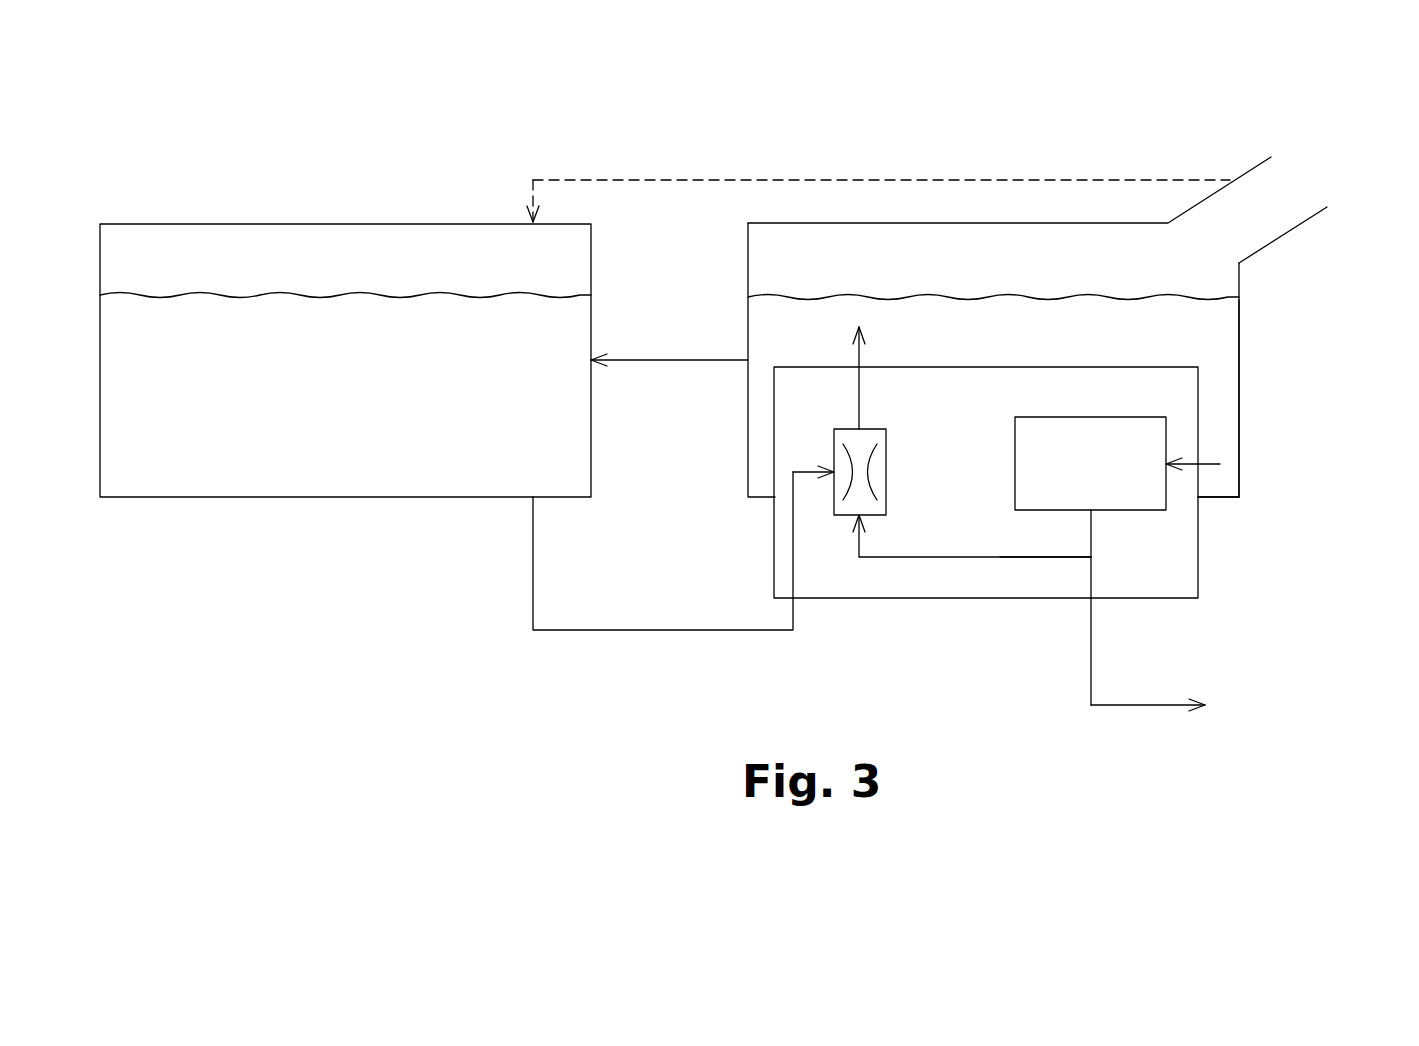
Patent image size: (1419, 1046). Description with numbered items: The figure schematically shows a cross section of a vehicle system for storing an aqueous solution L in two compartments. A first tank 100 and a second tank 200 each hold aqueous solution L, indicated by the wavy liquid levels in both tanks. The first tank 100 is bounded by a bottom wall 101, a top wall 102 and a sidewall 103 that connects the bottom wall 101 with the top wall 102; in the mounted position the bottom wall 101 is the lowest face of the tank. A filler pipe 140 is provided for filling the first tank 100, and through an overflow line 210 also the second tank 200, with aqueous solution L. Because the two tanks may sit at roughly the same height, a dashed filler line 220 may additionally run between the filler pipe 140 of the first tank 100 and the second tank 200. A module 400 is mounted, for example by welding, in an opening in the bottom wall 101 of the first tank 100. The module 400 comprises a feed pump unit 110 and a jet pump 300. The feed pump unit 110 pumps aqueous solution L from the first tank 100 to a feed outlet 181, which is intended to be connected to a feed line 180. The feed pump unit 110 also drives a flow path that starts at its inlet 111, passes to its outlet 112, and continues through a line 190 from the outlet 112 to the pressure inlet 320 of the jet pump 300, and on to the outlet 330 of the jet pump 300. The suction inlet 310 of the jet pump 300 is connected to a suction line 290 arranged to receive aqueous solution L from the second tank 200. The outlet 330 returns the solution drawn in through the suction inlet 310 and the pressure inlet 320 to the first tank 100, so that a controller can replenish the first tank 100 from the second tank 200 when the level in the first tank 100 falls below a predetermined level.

The first tank 100 is at (1077, 347).
The bottom wall 101 is at (1227, 497).
The top wall 102 is at (904, 223).
The sidewall 103 is at (1240, 365).
The feed pump unit 110 is at (1166, 436).
The inlet 111 is at (1220, 464).
The outlet 112 is at (1093, 527).
The filler pipe 140 is at (1292, 232).
The feed line 180 is at (1143, 707).
The feed outlet 181 is at (1095, 600).
The line 190 is at (1000, 560).
The second tank 200 is at (218, 188).
The overflow line 210 is at (667, 360).
The filler line 220 is at (667, 180).
The suction line 290 is at (637, 630).
The jet pump 300 is at (886, 466).
The suction inlet 310 is at (805, 470).
The pressure inlet 320 is at (860, 547).
The outlet 330 is at (860, 415).
The module 400 is at (917, 615).
The aqueous solution L is at (548, 413).